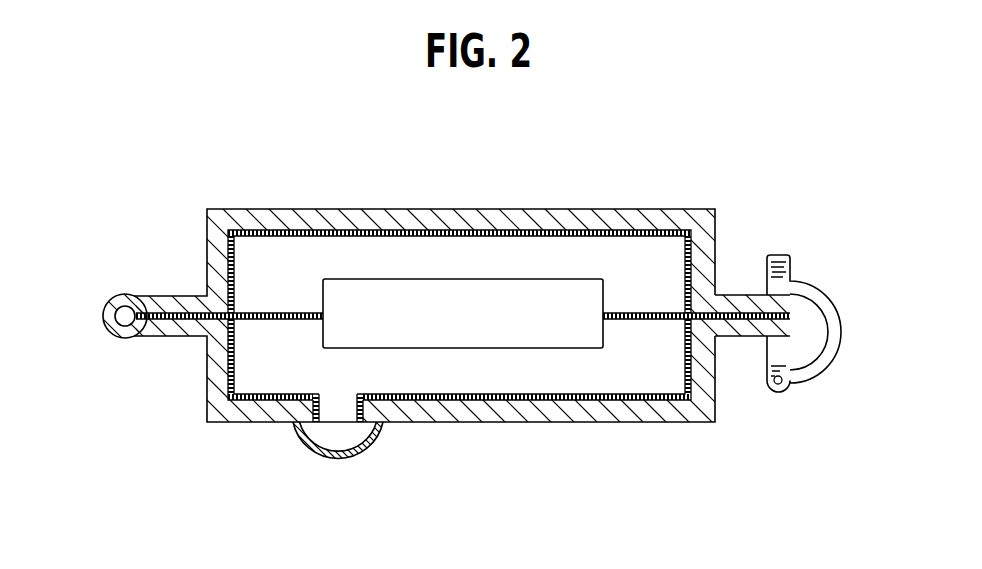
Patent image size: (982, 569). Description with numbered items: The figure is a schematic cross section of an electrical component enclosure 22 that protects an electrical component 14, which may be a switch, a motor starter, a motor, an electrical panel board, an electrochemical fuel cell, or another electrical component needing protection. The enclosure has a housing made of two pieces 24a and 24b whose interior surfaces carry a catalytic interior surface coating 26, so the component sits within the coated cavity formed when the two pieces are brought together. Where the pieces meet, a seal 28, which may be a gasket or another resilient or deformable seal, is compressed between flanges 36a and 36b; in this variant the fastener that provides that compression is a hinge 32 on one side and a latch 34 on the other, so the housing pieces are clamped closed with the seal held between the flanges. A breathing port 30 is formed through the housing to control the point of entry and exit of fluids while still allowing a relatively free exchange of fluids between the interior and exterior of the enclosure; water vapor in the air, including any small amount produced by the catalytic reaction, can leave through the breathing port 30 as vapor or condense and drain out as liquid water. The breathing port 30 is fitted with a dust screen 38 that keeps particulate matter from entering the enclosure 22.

The electrical component 14 is at (547, 333).
The electrical component enclosure 22 is at (423, 178).
The housing piece 24a is at (718, 224).
The housing piece 24b is at (715, 418).
The catalytic interior surface coating 26 is at (563, 233).
The seal 28 is at (278, 312).
The breathing port 30 is at (340, 417).
The hinge 32 is at (118, 292).
The latch 34 is at (842, 318).
The flange 36a is at (743, 297).
The flange 36b is at (738, 338).
The dust screen 38 is at (350, 455).